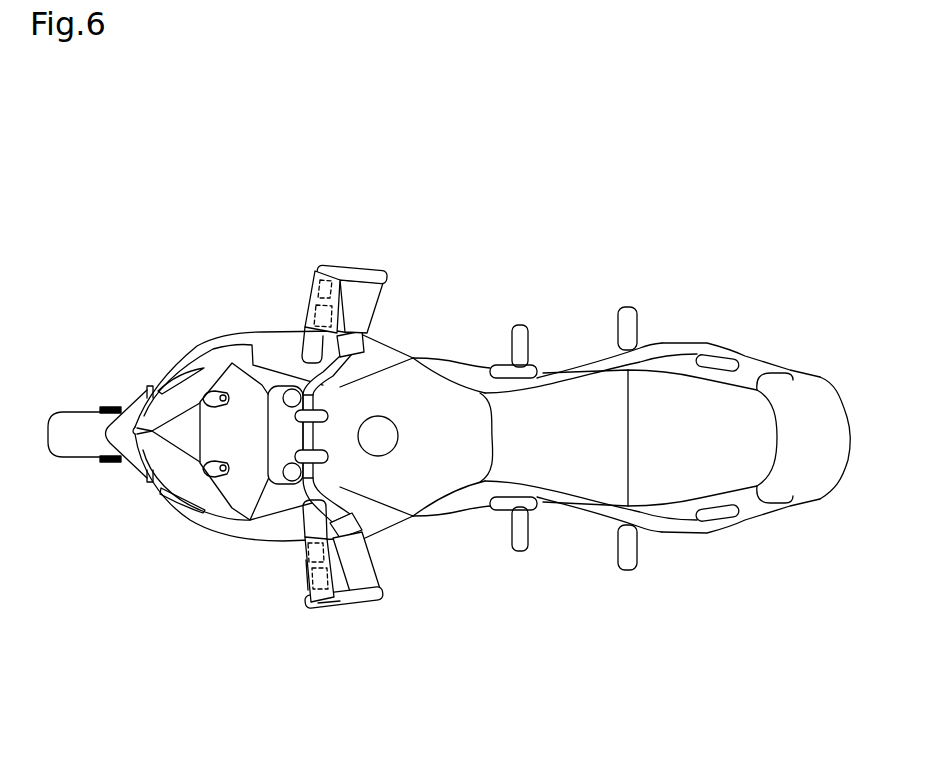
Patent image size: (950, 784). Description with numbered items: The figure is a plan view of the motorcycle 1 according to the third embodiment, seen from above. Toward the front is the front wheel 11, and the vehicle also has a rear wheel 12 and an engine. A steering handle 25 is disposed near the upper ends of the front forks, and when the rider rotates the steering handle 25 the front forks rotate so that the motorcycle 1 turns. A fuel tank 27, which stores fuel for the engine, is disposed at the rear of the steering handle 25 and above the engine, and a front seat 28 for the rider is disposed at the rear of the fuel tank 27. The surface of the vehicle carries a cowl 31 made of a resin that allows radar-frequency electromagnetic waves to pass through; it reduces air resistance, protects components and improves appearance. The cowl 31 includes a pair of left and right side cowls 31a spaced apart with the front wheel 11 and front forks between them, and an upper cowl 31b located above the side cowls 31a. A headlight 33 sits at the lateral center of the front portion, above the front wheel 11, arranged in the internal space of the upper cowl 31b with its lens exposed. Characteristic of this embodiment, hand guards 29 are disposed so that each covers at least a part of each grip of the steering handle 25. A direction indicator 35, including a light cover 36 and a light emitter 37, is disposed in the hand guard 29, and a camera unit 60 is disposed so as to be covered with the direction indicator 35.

The motorcycle 1 is at (90, 146).
The front wheel 11 is at (77, 450).
The rear wheel 12 is at (118, 443).
The steering handle 25 is at (367, 567).
The fuel tank 27 is at (447, 480).
The front seat 28 is at (585, 478).
The hand guard 29 is at (303, 520).
The cowl 31 is at (240, 243).
The side cowl 31a is at (217, 367).
The upper cowl 31b is at (183, 367).
The headlight 33 is at (165, 385).
The direction indicator 35 is at (326, 626).
The light cover 36 is at (305, 573).
The light emitter 37 is at (330, 613).
The camera unit 60 is at (306, 556).